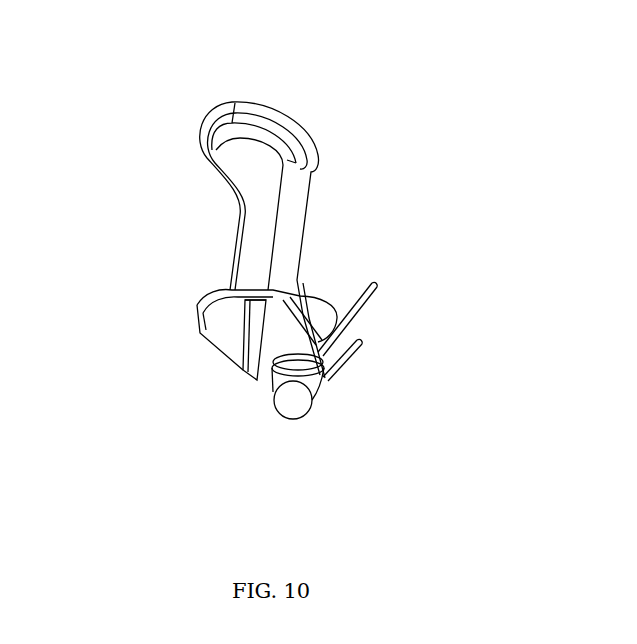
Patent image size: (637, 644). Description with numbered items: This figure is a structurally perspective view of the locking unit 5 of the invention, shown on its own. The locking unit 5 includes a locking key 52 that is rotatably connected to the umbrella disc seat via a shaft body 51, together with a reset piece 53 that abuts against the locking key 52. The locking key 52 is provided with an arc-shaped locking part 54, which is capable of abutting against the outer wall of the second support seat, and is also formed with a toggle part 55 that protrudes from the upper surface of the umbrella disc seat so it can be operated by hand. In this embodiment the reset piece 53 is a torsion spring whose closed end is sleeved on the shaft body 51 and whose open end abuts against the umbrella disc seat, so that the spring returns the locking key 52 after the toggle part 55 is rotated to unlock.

The locking unit 5 is at (198, 72).
The shaft body 51 is at (310, 405).
The locking key 52 is at (245, 343).
The reset piece 53 is at (382, 300).
The arc-shaped locking part 54 is at (197, 308).
The toggle part 55 is at (270, 138).